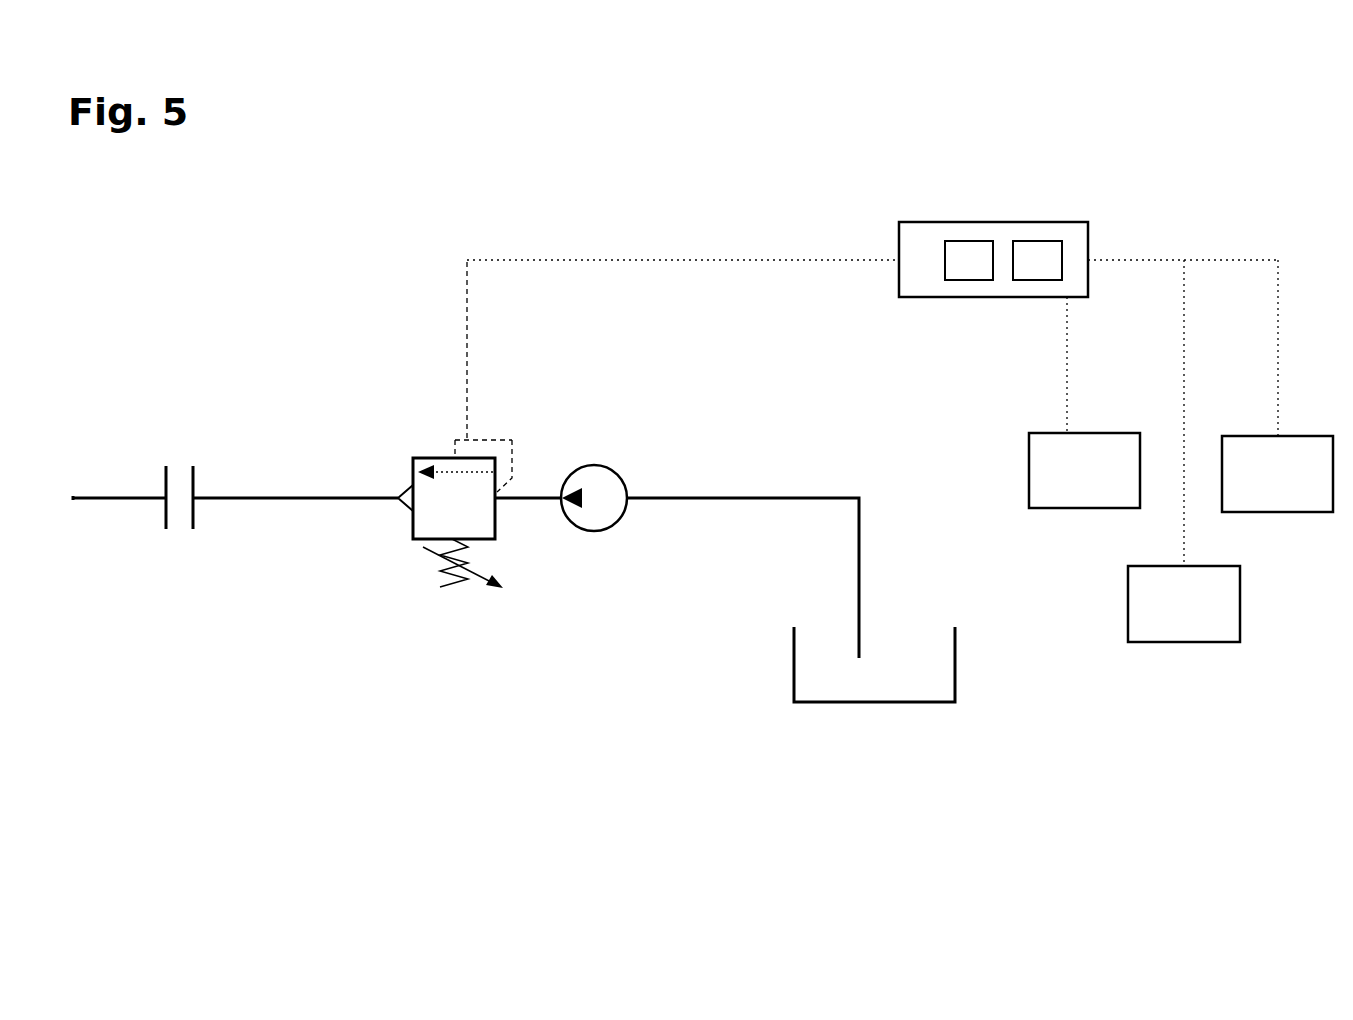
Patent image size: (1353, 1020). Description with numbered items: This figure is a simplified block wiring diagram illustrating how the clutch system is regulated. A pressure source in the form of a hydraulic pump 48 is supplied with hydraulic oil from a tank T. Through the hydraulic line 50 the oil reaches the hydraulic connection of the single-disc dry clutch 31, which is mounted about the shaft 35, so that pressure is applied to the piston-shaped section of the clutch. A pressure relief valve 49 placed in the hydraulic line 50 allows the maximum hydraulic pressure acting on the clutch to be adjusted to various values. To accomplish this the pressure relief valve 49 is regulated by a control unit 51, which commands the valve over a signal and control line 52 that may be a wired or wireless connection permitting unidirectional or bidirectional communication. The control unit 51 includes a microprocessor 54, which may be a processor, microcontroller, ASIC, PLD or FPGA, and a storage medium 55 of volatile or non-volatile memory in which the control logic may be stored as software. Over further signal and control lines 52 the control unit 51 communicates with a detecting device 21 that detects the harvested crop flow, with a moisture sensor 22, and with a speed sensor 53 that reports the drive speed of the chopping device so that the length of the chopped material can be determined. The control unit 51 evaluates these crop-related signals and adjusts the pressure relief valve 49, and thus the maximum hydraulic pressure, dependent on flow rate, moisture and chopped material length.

The detecting device 21 is at (1069, 486).
The moisture sensor 22 is at (1261, 488).
The single-disc dry clutch 31 is at (162, 428).
The shaft 35 is at (110, 500).
The hydraulic pump 48 is at (597, 532).
The pressure relief valve 49 is at (418, 458).
The hydraulic line 50 is at (265, 500).
The control unit 51 is at (993, 259).
The signal and control line 52 is at (655, 262).
The speed sensor 53 is at (1168, 619).
The microprocessor 54 is at (969, 260).
The storage medium 55 is at (1037, 260).
The tank T is at (898, 703).